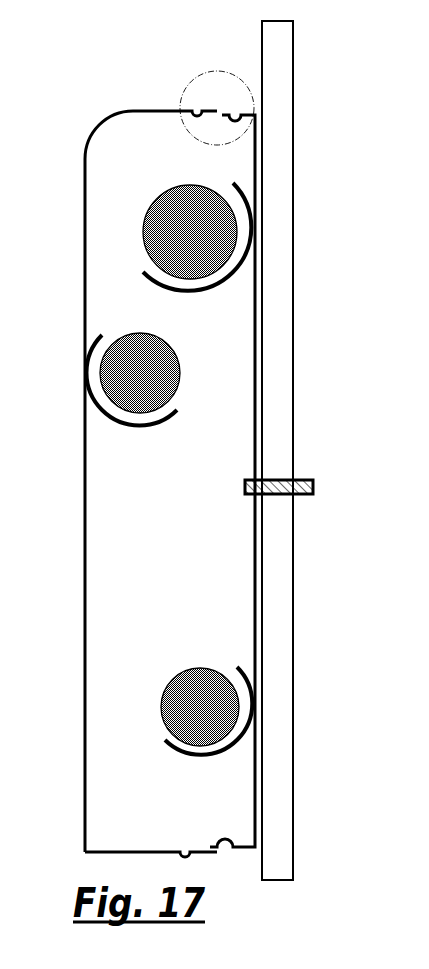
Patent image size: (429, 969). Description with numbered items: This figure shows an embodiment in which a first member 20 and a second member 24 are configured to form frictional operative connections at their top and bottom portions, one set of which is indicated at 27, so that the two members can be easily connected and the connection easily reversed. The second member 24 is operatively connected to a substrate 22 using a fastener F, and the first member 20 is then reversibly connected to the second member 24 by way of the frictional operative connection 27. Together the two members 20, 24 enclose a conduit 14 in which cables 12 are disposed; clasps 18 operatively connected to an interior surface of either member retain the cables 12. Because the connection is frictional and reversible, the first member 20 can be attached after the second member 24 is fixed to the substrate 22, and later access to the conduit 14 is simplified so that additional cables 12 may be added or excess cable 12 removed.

The cable 12 is at (201, 240).
The conduit 14 is at (181, 616).
The clasp 18 is at (223, 285).
The first member 20 is at (133, 484).
The substrate 22 is at (280, 266).
The second member 24 is at (263, 615).
The frictional operative connection 27 is at (182, 90).
The fastener F is at (313, 487).